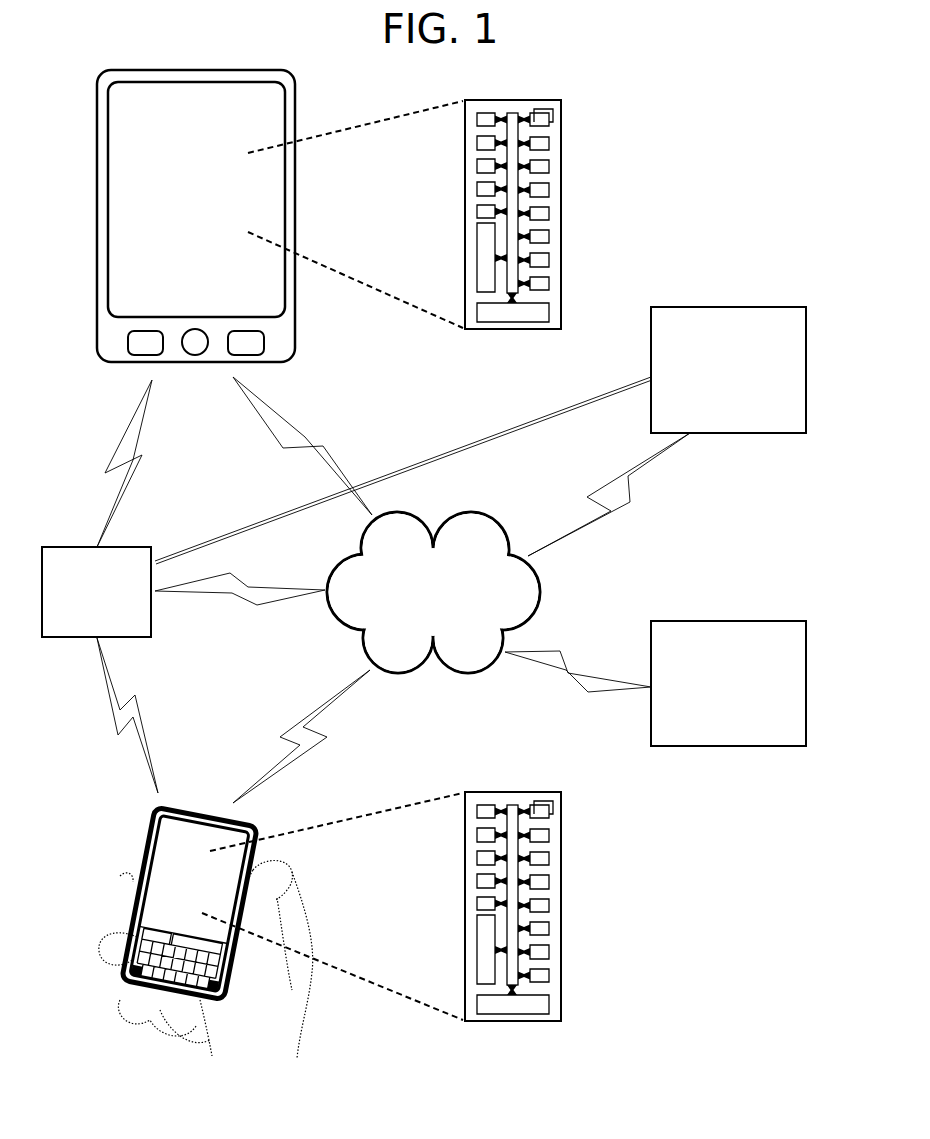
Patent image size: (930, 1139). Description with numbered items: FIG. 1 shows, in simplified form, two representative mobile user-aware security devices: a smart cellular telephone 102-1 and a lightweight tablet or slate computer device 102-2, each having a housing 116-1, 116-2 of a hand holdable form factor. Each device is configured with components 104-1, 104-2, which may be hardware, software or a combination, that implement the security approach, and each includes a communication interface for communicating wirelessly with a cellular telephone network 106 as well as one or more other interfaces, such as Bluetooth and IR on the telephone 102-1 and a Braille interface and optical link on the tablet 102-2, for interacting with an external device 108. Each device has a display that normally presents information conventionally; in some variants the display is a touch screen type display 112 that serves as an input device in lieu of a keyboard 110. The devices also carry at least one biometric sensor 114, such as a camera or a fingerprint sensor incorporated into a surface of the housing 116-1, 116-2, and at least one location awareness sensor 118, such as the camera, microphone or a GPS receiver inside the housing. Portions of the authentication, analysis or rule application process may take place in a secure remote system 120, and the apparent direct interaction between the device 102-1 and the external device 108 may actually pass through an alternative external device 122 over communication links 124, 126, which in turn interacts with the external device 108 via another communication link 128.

The smart cellular telephone 102-1 is at (259, 185).
The tablet computer device 102-2 is at (211, 929).
The components 104-1 is at (562, 122).
The components 104-2 is at (569, 906).
The wireless network 106 is at (416, 601).
The external device 108 is at (80, 602).
The keyboard 110 is at (213, 986).
The touch screen type display 112 is at (225, 100).
The biometric sensor 114 is at (245, 343).
The housing 116-1 is at (292, 192).
The housing 116-2 is at (190, 903).
The location awareness sensor 118 is at (147, 343).
The secure remote system 120 is at (712, 695).
The alternative external device 122 is at (712, 379).
The communication link 124 is at (325, 443).
The communication link 126 is at (631, 476).
The communication link 128 is at (470, 444).